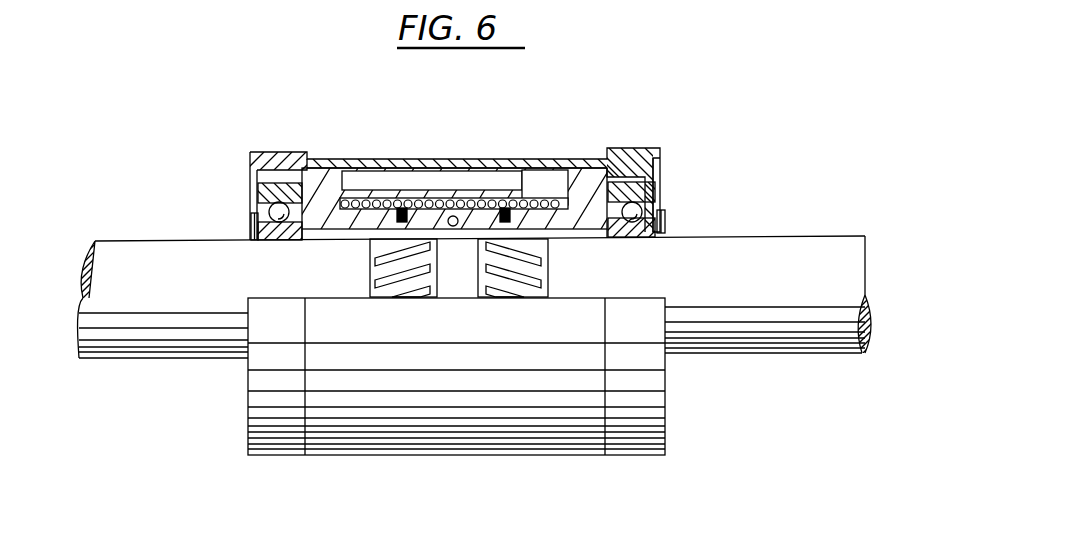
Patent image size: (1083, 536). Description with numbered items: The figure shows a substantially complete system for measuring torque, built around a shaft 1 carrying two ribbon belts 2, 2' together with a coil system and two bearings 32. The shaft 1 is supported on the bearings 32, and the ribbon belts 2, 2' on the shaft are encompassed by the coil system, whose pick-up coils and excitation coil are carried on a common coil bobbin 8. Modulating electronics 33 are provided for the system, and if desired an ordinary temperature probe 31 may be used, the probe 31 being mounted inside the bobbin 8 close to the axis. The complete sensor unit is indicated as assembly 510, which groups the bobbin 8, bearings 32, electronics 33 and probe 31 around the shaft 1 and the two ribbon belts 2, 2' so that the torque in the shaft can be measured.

The shaft 1 is at (702, 345).
The magnet pole block 2 is at (446, 371).
The magnet pole block 2' is at (458, 372).
The coil bobbin 8 is at (531, 202).
The temperature probe 31 is at (452, 216).
The bearings 32 is at (657, 222).
The modulating electronics 33 is at (483, 180).
The sensor bearing assembly 510 is at (479, 148).